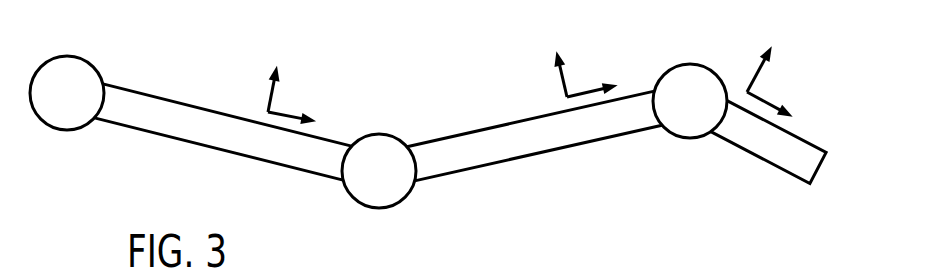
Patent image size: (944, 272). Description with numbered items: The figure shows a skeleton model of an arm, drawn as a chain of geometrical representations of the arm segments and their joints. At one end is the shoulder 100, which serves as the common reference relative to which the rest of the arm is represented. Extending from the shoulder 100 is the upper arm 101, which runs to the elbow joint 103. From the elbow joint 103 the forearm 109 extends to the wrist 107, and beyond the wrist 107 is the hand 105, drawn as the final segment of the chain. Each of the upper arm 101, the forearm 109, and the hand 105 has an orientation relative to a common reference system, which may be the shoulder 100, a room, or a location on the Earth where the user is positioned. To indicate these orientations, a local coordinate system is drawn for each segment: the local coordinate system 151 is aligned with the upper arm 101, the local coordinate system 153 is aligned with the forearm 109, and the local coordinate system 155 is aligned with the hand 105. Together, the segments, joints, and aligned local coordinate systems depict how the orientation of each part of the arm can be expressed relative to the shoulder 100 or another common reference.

The shoulder 100 is at (85, 106).
The upper arm 101 is at (238, 147).
The elbow joint 103 is at (397, 184).
The forearm 109 is at (553, 155).
The wrist 107 is at (708, 114).
The hand 105 is at (786, 154).
The local coordinate system 151 is at (272, 101).
The local coordinate system 153 is at (565, 88).
The local coordinate system 155 is at (747, 88).